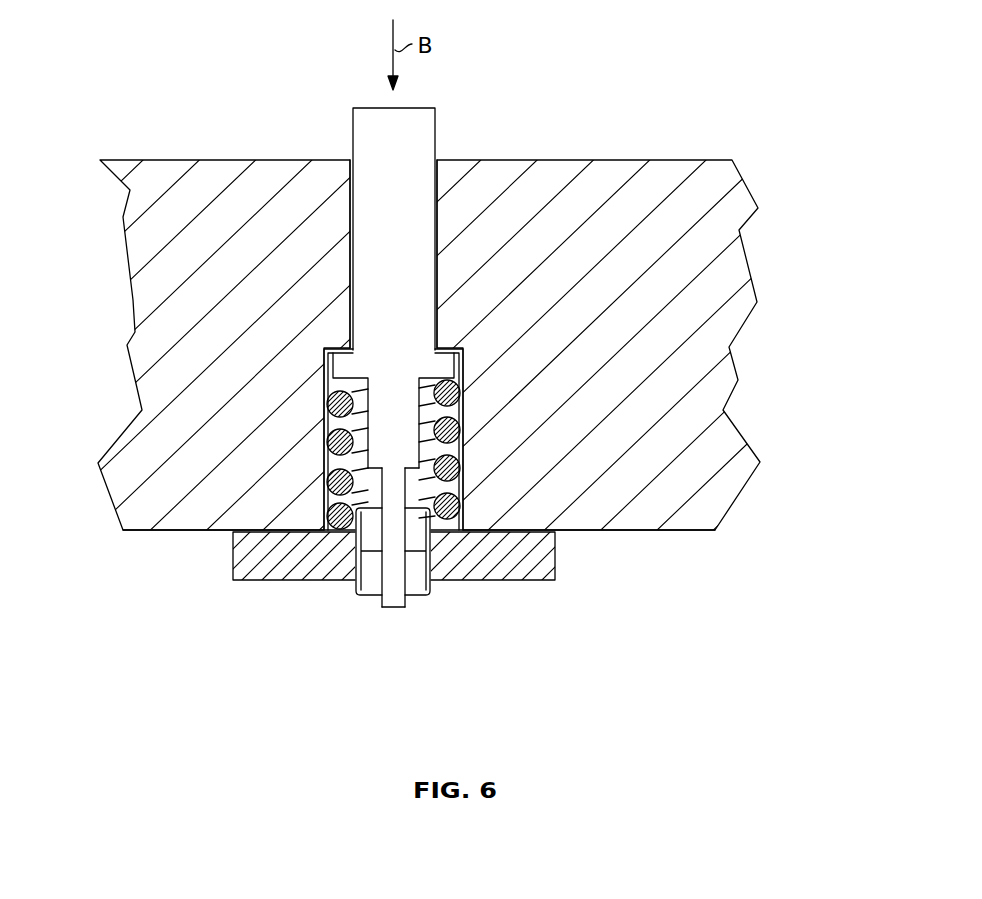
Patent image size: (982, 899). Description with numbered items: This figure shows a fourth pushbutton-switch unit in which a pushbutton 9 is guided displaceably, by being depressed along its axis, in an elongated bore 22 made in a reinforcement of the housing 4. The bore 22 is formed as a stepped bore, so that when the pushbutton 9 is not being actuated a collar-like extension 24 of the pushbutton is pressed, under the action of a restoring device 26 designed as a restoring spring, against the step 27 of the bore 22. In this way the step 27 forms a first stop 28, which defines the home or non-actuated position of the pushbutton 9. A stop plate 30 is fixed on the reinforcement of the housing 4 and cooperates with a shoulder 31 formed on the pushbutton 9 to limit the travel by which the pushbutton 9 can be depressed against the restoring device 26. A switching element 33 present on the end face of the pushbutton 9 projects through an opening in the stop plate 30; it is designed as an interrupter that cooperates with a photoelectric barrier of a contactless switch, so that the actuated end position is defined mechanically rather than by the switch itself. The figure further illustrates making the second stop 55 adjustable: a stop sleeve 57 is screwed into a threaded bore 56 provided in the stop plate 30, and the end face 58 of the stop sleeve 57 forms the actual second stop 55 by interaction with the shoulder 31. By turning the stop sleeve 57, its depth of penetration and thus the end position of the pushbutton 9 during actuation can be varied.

The housing 4 is at (492, 185).
The pushbutton 9 is at (425, 135).
The elongated bore 22 is at (352, 200).
The collar-like extension 24 is at (443, 367).
The restoring device 26 is at (458, 487).
The step 27 is at (445, 347).
The first stop 28 is at (335, 335).
The stop plate 30 is at (253, 557).
The shoulder 31 is at (376, 474).
The switching element 33 is at (374, 606).
The second stop 55 is at (420, 496).
The threaded bore 56 is at (350, 570).
The stop sleeve 57 is at (417, 583).
The end face 58 is at (380, 498).